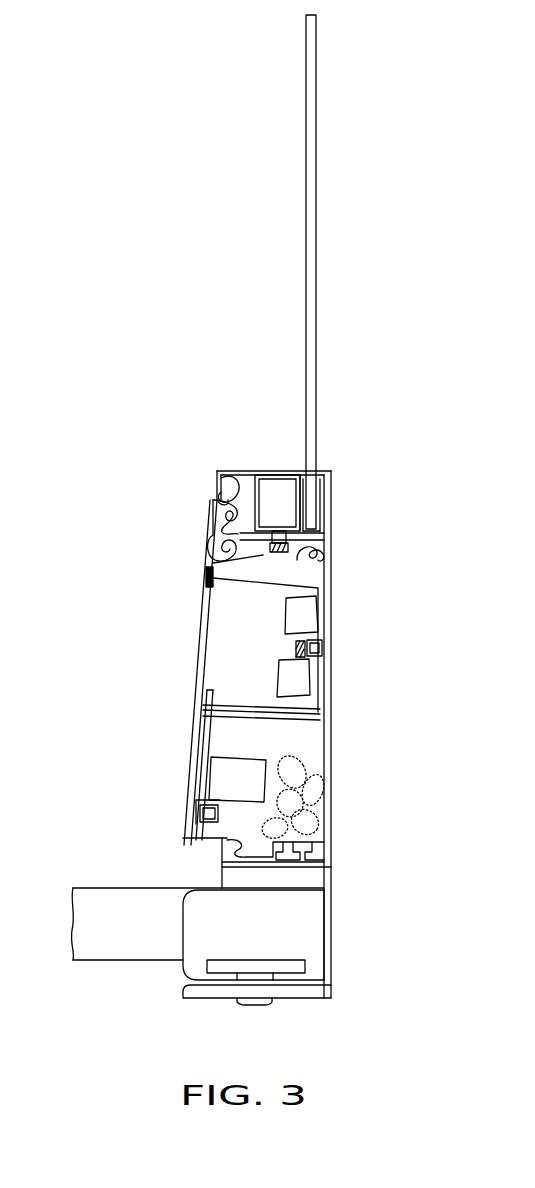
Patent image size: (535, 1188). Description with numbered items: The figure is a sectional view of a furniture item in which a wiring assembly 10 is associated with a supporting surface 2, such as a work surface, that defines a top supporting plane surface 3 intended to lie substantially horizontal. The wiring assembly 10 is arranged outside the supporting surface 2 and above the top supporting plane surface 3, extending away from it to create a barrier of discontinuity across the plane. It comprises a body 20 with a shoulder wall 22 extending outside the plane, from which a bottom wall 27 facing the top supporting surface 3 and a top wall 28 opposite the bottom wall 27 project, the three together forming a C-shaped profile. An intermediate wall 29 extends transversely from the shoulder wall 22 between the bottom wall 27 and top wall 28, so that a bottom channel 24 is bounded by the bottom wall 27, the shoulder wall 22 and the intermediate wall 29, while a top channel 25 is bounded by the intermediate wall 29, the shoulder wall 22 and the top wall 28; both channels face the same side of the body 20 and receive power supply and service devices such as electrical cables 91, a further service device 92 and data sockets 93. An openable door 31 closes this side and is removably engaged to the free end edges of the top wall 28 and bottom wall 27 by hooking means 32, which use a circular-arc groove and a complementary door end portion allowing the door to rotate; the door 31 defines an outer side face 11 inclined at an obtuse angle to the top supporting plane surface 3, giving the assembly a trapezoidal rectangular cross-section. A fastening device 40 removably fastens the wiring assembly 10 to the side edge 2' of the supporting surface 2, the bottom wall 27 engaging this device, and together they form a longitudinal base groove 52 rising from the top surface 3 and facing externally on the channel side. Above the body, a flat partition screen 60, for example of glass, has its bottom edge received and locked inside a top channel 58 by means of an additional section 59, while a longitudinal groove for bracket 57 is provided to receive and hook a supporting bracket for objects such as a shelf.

The supporting surface 2 is at (126, 960).
The side edge 2' is at (367, 935).
The top supporting plane surface 3 is at (98, 888).
The wiring assembly 10 is at (186, 386).
The outer side face 11 is at (192, 578).
The body 20 is at (362, 650).
The shoulder wall 22 is at (330, 692).
The bottom channel 24 is at (212, 738).
The top channel 25 is at (210, 560).
The bottom wall 27 is at (327, 837).
The top wall 28 is at (310, 558).
The intermediate wall 29 is at (285, 726).
The openable door 31 is at (198, 702).
The hooking means 32 is at (200, 537).
The fastening device 40 is at (346, 958).
The longitudinal base groove 52 is at (220, 873).
The longitudinal groove for bracket 57 is at (216, 481).
The top channel 58 is at (318, 506).
The additional section 59 is at (280, 472).
The partition screen 60 is at (317, 218).
The electrical cables 91 is at (325, 774).
The power supply and/or service device 92 is at (237, 619).
The data sockets 93 is at (200, 795).